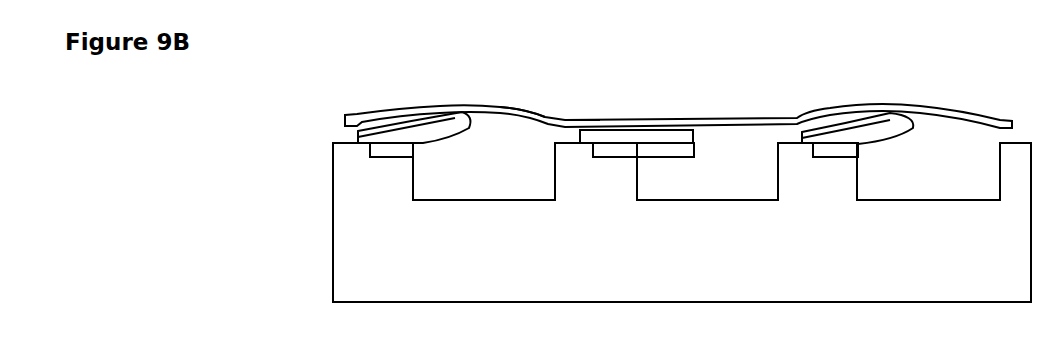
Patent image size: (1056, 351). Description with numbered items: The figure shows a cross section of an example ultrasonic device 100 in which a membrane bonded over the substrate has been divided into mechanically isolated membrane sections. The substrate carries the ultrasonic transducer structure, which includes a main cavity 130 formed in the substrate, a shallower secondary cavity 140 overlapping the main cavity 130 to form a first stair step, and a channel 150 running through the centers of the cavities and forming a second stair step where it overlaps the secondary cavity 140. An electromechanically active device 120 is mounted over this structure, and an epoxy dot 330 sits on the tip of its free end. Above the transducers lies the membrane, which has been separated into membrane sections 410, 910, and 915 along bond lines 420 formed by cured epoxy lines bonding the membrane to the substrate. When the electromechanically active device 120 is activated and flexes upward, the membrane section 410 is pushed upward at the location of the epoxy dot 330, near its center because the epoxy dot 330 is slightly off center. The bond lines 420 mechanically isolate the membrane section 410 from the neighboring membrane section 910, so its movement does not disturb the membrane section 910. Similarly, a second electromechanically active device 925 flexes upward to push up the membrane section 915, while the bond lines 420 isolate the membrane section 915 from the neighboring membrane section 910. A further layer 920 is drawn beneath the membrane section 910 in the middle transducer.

The ultrasonic device 100 is at (271, 107).
The channel 150 is at (330, 130).
The secondary cavity 140 is at (363, 163).
The main cavity 130 is at (400, 193).
The epoxy dot 330 is at (429, 101).
The electromechanically active device 120 is at (473, 98).
The membrane section 410 is at (532, 102).
The bond line 420 is at (578, 113).
The membrane section 910 is at (658, 111).
The lower layer 920 is at (703, 125).
The membrane section 915 is at (883, 96).
The electromechanically active device 925 is at (913, 113).